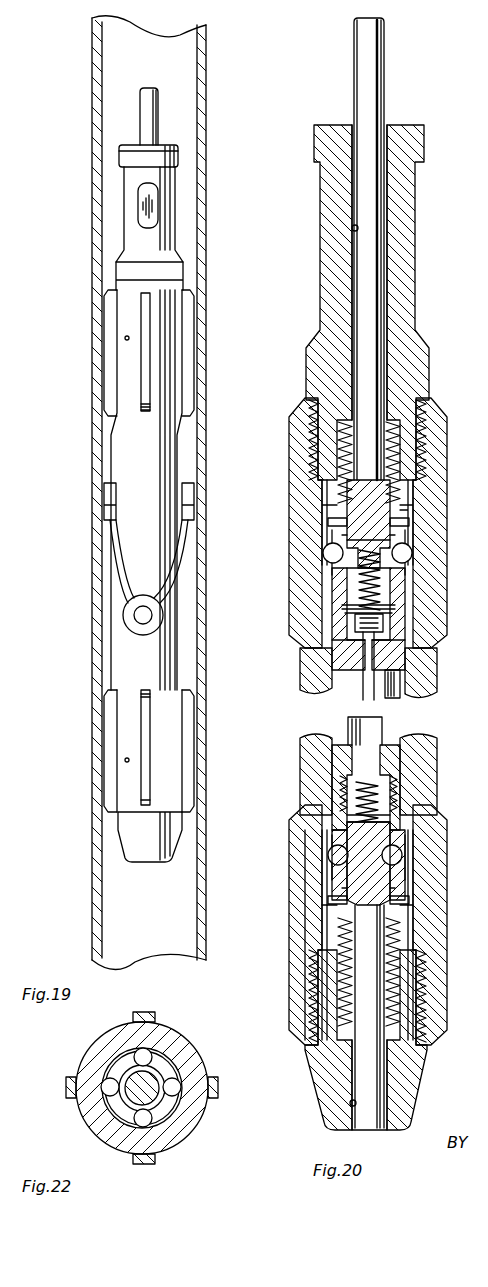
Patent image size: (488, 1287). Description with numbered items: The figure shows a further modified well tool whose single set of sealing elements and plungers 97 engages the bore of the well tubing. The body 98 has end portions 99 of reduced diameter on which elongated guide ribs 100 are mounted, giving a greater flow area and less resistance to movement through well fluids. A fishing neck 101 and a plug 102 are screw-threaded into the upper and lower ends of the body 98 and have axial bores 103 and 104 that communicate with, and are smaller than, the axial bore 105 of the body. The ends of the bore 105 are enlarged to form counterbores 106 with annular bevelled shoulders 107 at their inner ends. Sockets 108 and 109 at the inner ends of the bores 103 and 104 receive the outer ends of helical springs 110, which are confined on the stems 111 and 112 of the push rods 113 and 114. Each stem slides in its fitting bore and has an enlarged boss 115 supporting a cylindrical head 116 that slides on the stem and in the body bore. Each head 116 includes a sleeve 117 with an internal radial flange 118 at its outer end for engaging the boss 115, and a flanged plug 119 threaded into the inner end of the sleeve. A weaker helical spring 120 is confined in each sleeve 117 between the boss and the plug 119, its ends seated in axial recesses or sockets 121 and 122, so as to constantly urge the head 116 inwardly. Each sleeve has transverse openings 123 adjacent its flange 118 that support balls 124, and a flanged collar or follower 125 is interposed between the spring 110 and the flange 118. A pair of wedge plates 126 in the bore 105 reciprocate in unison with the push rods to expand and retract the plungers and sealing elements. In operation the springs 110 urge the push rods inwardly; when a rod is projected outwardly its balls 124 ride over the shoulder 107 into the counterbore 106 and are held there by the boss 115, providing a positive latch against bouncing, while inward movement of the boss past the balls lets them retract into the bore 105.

In FIG. 19, the set of sealing elements and plungers 97 is at (93, 509).
In FIG. 19, the body 98 is at (110, 632).
In FIG. 22, the body 98 is at (208, 1075).
In FIG. 20, the body 98 is at (430, 668).
In FIG. 19, the end portions 99 is at (135, 358).
In FIG. 20, the end portions 99 is at (305, 938).
In FIG. 19, the guide ribs 100 is at (186, 338).
In FIG. 22, the guide ribs 100 is at (76, 1088).
In FIG. 20, the guide ribs 100 is at (294, 472).
In FIG. 19, the fishing neck 101 is at (125, 210).
In FIG. 20, the fishing neck 101 is at (416, 240).
In FIG. 19, the plug 102 is at (118, 838).
In FIG. 20, the plug 102 is at (421, 1094).
In FIG. 20, the axial bore 103 is at (353, 236).
In FIG. 20, the axial bore 104 is at (352, 1112).
In FIG. 22, the axial bore 105 is at (116, 1062).
In FIG. 20, the axial bore 105 is at (383, 740).
In FIG. 20, the counterbores 106 is at (325, 520).
In FIG. 20, the bevelled shoulders 107 is at (327, 914).
In FIG. 20, the socket 108 is at (343, 440).
In FIG. 20, the socket 109 is at (343, 992).
In FIG. 20, the helical springs 110 is at (393, 440).
In FIG. 19, the stem 111 is at (160, 102).
In FIG. 22, the stem 111 is at (152, 1098).
In FIG. 20, the stem 111 is at (385, 58).
In FIG. 20, the stem 112 is at (384, 1072).
In FIG. 20, the push rod 113 is at (366, 292).
In FIG. 20, the push rod 114 is at (350, 1082).
In FIG. 20, the boss 115 is at (342, 537).
In FIG. 22, the cylindrical head 116 is at (147, 1057).
In FIG. 20, the cylindrical head 116 is at (406, 598).
In FIG. 22, the sleeve 117 is at (115, 1108).
In FIG. 20, the sleeve 117 is at (347, 608).
In FIG. 20, the internal radial flange 118 is at (412, 538).
In FIG. 20, the flanged plug 119 is at (335, 650).
In FIG. 20, the helical spring 120 is at (358, 585).
In FIG. 20, the axial recess or socket 121 is at (337, 568).
In FIG. 20, the axial recess or socket 122 is at (390, 622).
In FIG. 22, the transverse openings 123 is at (108, 1082).
In FIG. 20, the transverse openings 123 is at (337, 860).
In FIG. 22, the balls 124 is at (150, 1120).
In FIG. 20, the balls 124 is at (410, 565).
In FIG. 20, the flanged collar or follower 125 is at (418, 523).
In FIG. 20, the wedge members or plates 126 is at (365, 695).